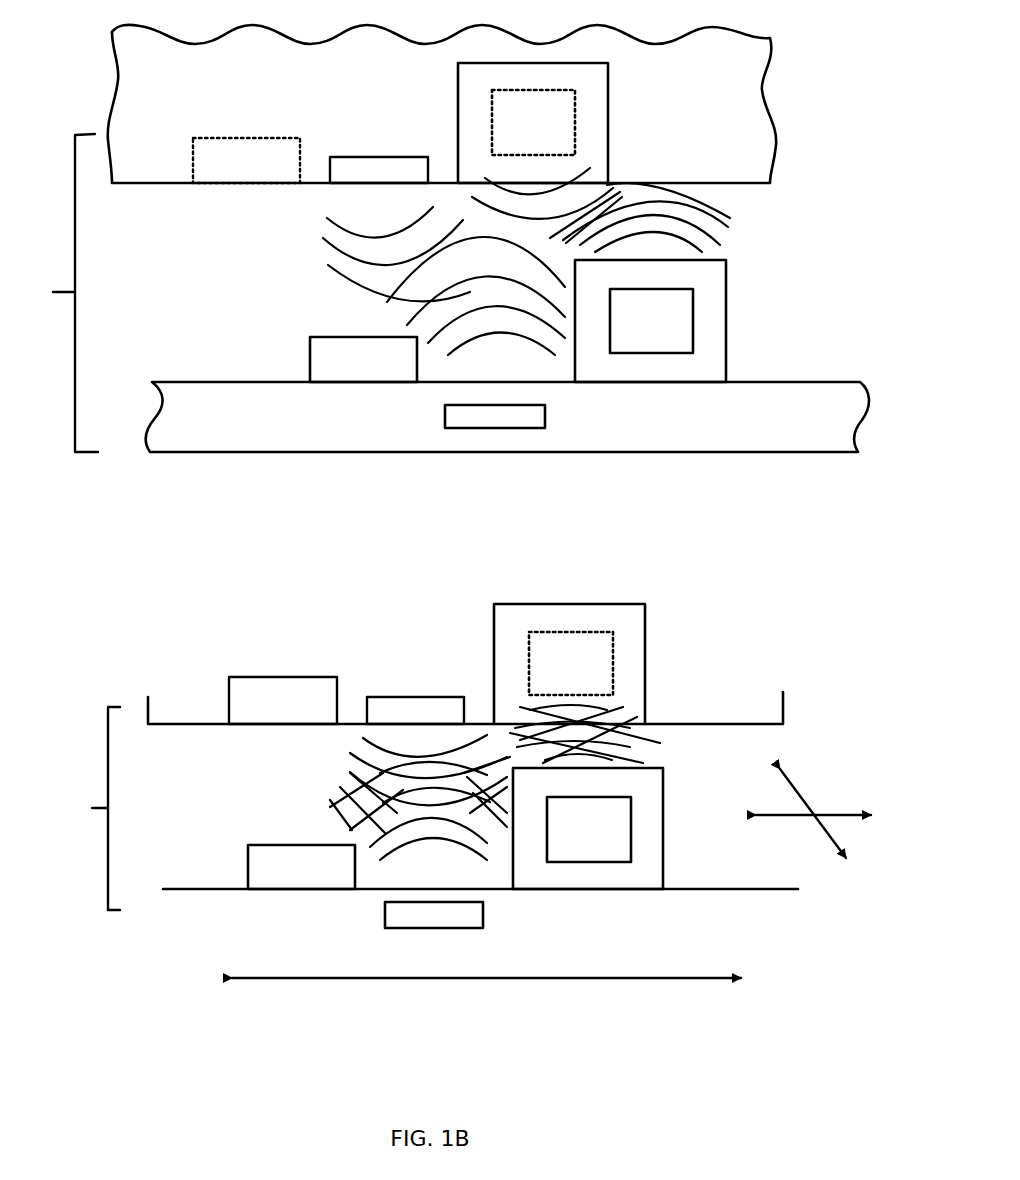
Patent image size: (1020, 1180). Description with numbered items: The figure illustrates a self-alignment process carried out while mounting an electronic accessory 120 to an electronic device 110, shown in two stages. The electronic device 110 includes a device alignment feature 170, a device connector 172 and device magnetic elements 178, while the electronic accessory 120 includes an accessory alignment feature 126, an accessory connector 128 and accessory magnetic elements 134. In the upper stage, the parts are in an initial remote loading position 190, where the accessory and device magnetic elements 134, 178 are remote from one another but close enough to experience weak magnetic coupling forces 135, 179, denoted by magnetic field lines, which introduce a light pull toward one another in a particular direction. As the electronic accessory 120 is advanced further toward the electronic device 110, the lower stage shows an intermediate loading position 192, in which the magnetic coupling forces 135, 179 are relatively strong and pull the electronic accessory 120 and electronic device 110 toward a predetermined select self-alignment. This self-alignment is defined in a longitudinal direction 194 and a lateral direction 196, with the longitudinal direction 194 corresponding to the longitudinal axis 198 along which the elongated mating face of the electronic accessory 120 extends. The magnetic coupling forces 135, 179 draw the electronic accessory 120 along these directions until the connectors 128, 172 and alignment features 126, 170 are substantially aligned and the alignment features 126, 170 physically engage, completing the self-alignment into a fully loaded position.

The electronic device 110 is at (822, 151).
The electronic accessory 120 is at (884, 361).
The accessory alignment feature 126 is at (726, 350).
The accessory connector 128 is at (310, 356).
The accessory magnetic elements 134 is at (545, 418).
The magnetic coupling forces 135 is at (735, 220).
The device alignment feature 170 is at (608, 152).
The device connector 172 is at (193, 152).
The device magnetic elements 178 is at (492, 147).
The magnetic coupling forces 179 is at (336, 248).
The initial remote loading position 190 is at (50, 293).
The intermediate loading position 192 is at (83, 808).
The longitudinal direction 194 is at (855, 818).
The lateral direction 196 is at (790, 780).
The longitudinal axis 198 is at (502, 979).